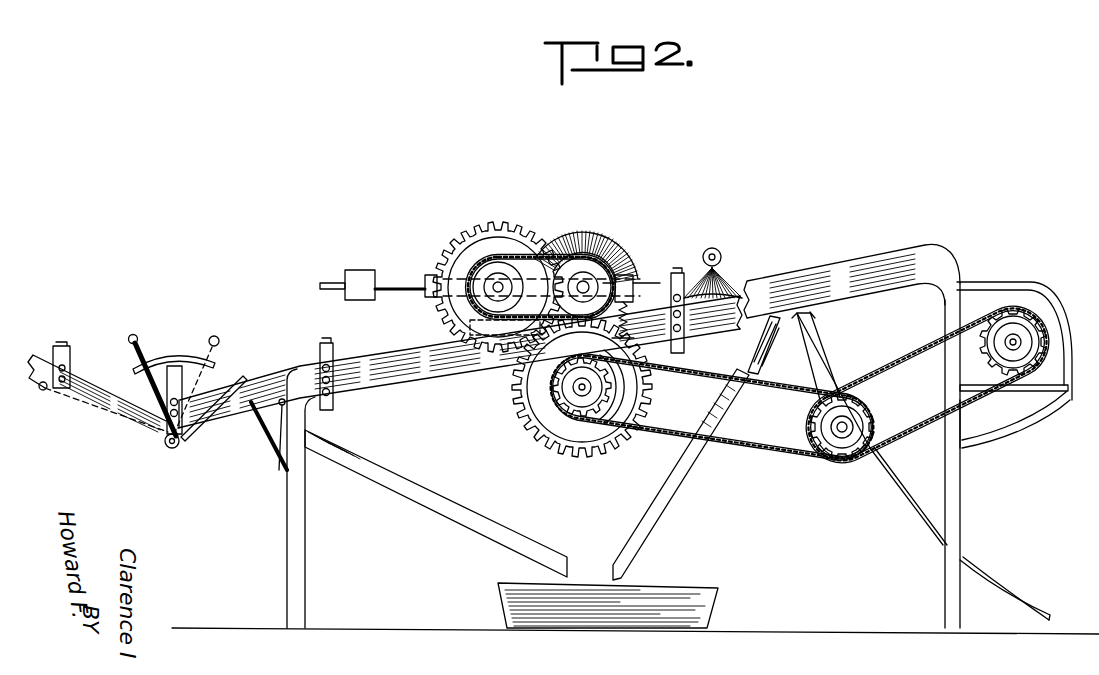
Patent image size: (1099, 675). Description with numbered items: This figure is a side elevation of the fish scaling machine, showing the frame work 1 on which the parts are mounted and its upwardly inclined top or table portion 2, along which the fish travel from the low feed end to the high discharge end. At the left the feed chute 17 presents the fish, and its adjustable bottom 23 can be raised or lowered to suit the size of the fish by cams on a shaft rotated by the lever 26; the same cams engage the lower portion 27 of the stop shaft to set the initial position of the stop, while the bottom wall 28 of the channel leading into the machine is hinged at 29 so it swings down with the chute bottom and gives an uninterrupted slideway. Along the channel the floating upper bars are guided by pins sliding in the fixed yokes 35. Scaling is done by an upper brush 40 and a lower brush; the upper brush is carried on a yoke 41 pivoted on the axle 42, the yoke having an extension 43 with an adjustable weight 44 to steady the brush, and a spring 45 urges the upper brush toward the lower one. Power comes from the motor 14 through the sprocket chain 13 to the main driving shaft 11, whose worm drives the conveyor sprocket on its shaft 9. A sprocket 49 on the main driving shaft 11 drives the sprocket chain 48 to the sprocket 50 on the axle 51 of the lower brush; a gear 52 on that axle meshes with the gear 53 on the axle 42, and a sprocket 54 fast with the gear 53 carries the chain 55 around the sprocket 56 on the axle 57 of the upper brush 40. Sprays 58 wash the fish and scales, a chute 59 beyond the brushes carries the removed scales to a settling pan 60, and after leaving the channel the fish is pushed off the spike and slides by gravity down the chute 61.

The frame work 1 is at (866, 262).
The top or table portion 2 is at (410, 349).
The shaft 9 is at (812, 321).
The transverse or main driving shaft 11 is at (846, 426).
The sprocket chain 13 is at (893, 362).
The motor 14 is at (1026, 314).
The chute 17 is at (56, 350).
The adjustable bottom 23 is at (115, 412).
The lever 26 is at (211, 343).
The lower portion of the stop shaft 27 is at (180, 446).
The bottom wall of the channel 28 is at (220, 420).
The hinge 29 is at (270, 408).
The fixed yokes 35 is at (326, 343).
The upper brush 40 is at (636, 280).
The yoke 41 is at (432, 280).
The axle 42 is at (498, 283).
The extension 43 is at (333, 284).
The adjustable weight 44 is at (357, 271).
The spring 45 is at (630, 298).
The sprocket chain 48 is at (774, 448).
The sprocket 49 is at (842, 458).
The sprocket 50 is at (614, 399).
The axle 51 is at (580, 389).
The gear 52 is at (516, 401).
The gear 53 is at (461, 238).
The sprocket 54 is at (528, 254).
The chain 55 is at (583, 234).
The sprocket 56 is at (588, 284).
The axle 57 is at (612, 276).
The sprays 58 is at (720, 254).
The chute 59 is at (660, 508).
The settling pan 60 is at (700, 586).
The chute 61 is at (918, 512).